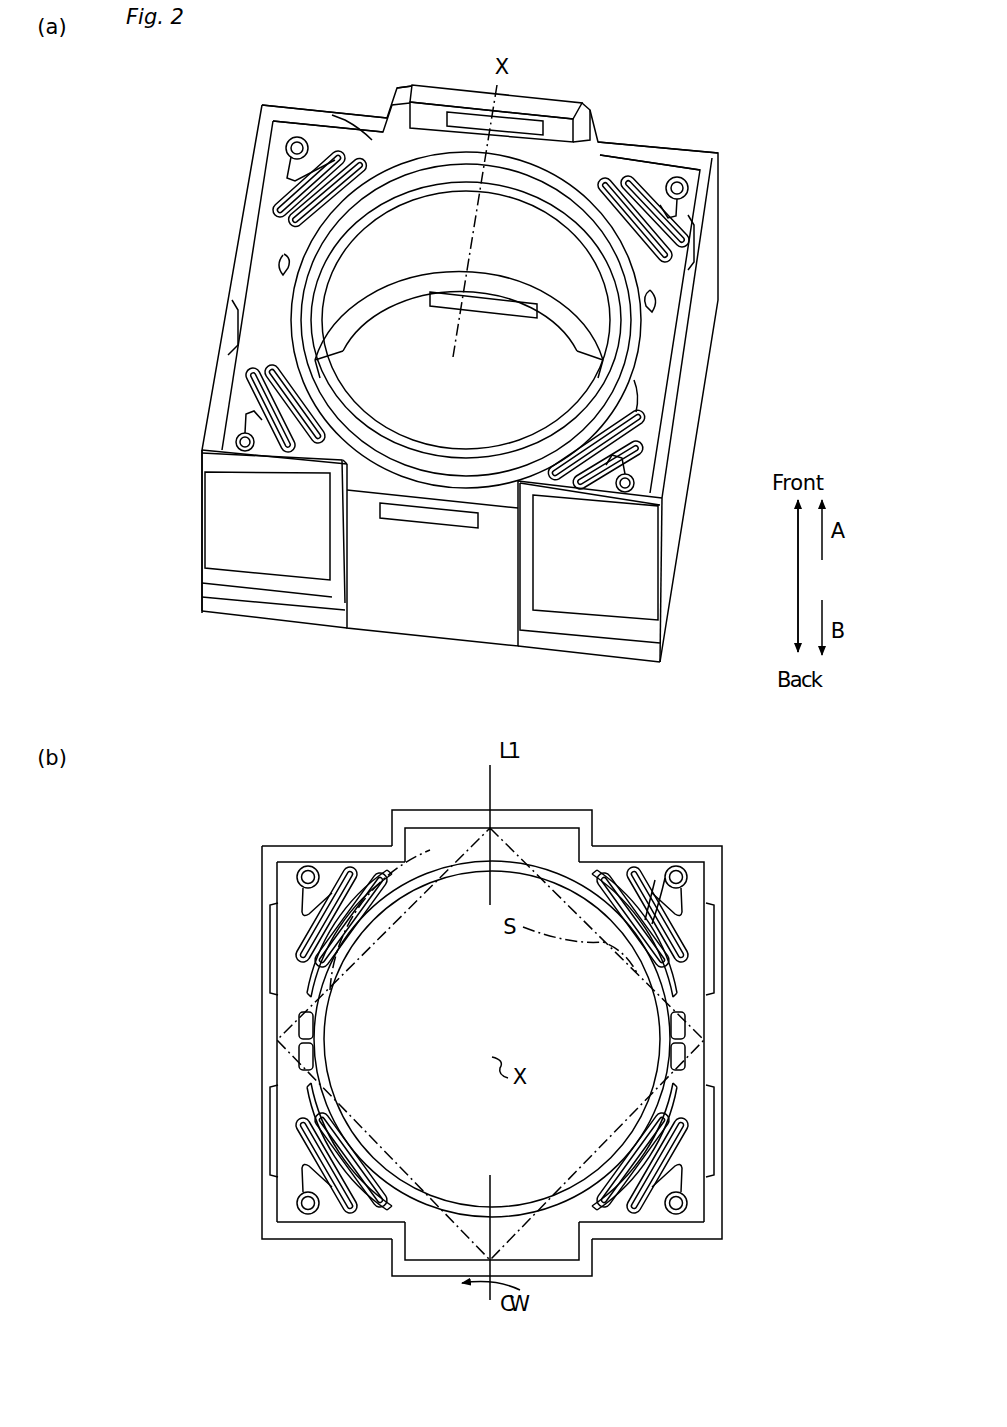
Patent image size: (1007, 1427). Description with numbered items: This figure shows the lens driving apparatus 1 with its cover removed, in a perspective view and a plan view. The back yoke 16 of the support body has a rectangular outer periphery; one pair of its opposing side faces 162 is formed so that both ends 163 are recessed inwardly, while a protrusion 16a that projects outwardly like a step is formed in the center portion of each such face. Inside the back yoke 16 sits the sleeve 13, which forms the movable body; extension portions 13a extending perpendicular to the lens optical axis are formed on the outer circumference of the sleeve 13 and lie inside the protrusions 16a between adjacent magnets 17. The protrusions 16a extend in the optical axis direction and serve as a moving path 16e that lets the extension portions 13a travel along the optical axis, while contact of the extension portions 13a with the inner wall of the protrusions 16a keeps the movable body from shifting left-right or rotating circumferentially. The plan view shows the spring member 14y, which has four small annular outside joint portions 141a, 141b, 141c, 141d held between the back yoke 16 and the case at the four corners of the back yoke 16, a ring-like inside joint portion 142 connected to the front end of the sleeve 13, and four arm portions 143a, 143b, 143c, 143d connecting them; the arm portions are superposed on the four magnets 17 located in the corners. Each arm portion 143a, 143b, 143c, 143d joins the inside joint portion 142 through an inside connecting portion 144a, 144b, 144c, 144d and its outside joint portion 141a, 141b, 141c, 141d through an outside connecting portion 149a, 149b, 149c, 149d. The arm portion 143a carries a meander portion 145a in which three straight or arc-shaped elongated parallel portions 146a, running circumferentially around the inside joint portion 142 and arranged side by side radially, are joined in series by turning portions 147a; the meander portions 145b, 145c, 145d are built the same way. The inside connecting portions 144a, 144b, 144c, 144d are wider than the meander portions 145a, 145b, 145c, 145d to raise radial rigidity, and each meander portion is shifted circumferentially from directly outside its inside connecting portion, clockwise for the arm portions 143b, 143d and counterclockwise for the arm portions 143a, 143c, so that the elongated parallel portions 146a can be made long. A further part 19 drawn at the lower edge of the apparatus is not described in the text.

The lens driving apparatus 1 is at (232, 110).
The sleeve 13 is at (472, 372).
The extension portion 13a is at (545, 150).
The spring member 14y is at (617, 322).
The back yoke 16 is at (466, 665).
The protrusion 16a is at (540, 103).
The moving path 16e is at (470, 115).
The magnet 17 is at (282, 180).
The bottom plate 19 is at (650, 652).
The outside joint portion 141a is at (700, 880).
The outside joint portion 141b is at (300, 868).
The outside joint portion 141c is at (300, 1207).
The outside joint portion 141d is at (700, 1208).
The inside joint portion 142 is at (388, 908).
The arm portion 143a is at (770, 605).
The arm portion 143b is at (256, 506).
The arm portion 143c is at (168, 738).
The arm portion 143d is at (749, 778).
The inside connecting portion 144a is at (690, 1000).
The inside connecting portion 144b is at (298, 1010).
The inside connecting portion 144c is at (298, 1075).
The inside connecting portion 144d is at (688, 1070).
The meander portion 145a is at (672, 233).
The meander portion 145b is at (395, 145).
The meander portion 145c is at (250, 370).
The meander portion 145d is at (645, 415).
The elongated parallel portion 146a is at (640, 878).
The turning portion 147a is at (588, 878).
The outside connecting portion 149a is at (685, 878).
The outside connecting portion 149b is at (330, 878).
The outside connecting portion 149c is at (345, 1205).
The outside connecting portion 149d is at (660, 1212).
The side face 162 is at (245, 222).
The end 163 is at (300, 108).